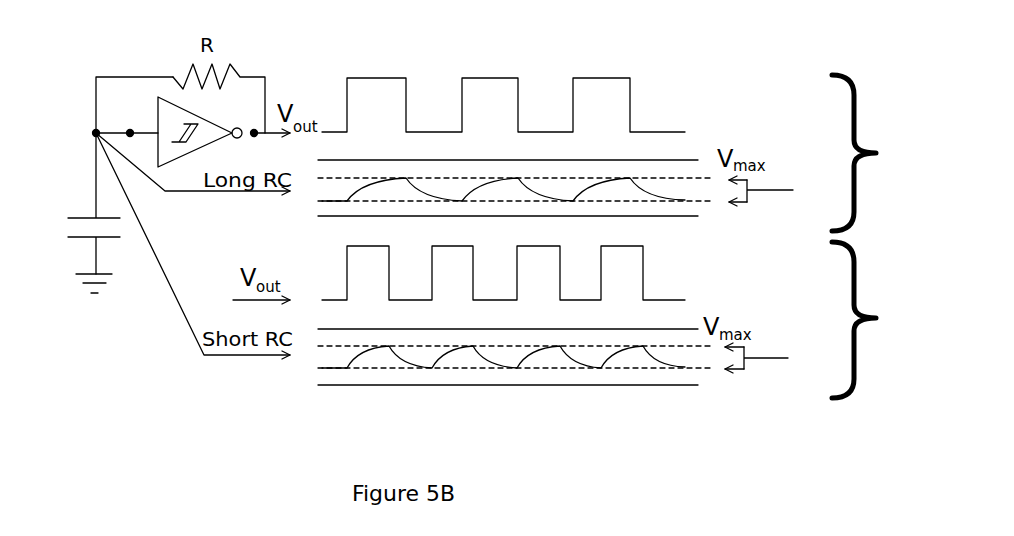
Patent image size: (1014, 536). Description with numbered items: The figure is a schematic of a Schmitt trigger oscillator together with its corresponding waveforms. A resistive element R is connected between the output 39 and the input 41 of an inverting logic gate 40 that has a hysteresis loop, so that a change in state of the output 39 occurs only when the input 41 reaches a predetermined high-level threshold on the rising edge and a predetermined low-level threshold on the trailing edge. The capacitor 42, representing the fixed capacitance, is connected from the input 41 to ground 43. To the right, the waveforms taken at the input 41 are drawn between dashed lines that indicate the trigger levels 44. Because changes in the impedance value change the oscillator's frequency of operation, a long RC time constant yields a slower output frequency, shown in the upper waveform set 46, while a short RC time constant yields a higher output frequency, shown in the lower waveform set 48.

The output 39 is at (252, 130).
The inverting logic gate 40 is at (168, 112).
The input 41 is at (128, 131).
The capacitor 42 is at (84, 203).
The ground 43 is at (77, 290).
The trigger levels 44 is at (776, 275).
The waveform set 46 is at (872, 153).
The waveform set 48 is at (873, 320).